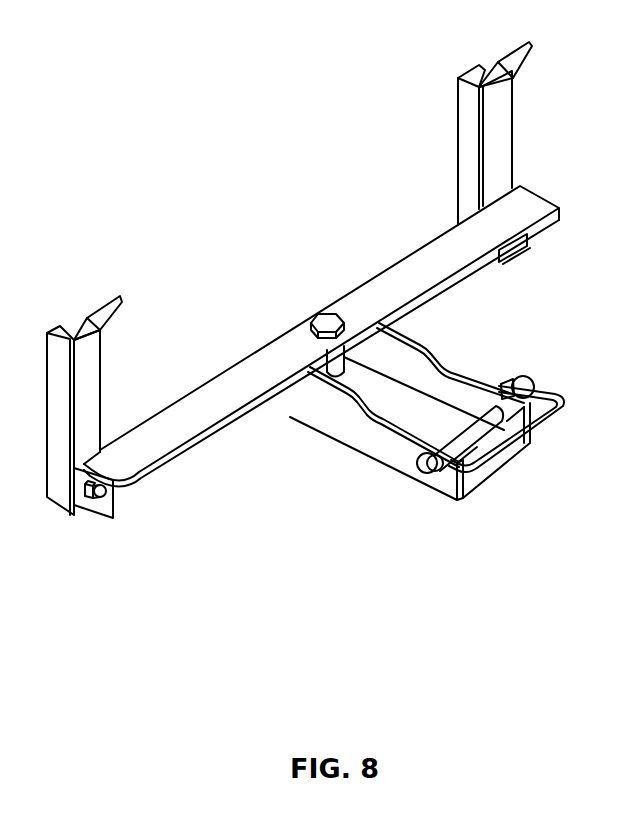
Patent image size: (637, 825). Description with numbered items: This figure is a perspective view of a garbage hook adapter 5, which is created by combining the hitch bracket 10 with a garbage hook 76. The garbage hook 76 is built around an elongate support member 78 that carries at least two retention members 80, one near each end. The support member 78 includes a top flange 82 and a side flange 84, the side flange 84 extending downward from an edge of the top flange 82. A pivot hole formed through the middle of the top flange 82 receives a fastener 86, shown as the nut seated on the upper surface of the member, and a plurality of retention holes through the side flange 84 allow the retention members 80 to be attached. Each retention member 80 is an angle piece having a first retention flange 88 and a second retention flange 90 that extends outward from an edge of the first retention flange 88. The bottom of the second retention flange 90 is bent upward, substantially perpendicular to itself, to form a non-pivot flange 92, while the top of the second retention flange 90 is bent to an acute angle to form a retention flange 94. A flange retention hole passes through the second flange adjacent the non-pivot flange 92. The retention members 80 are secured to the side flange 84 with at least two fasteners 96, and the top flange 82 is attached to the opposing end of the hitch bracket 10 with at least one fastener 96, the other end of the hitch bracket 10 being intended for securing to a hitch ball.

The garbage hook adapter 5 is at (301, 109).
The hitch bracket 10 is at (387, 508).
The garbage hook 76 is at (282, 303).
The support member 78 is at (222, 385).
The retention member 80 is at (442, 108).
The top flange 82 is at (212, 416).
The side flange 84 is at (65, 497).
The fastener 86 is at (327, 314).
The first retention flange 88 is at (57, 333).
The second retention flange 90 is at (100, 395).
The non-pivot flange 92 is at (100, 518).
The retention flange 94 is at (100, 300).
The fastener 96 is at (117, 499).